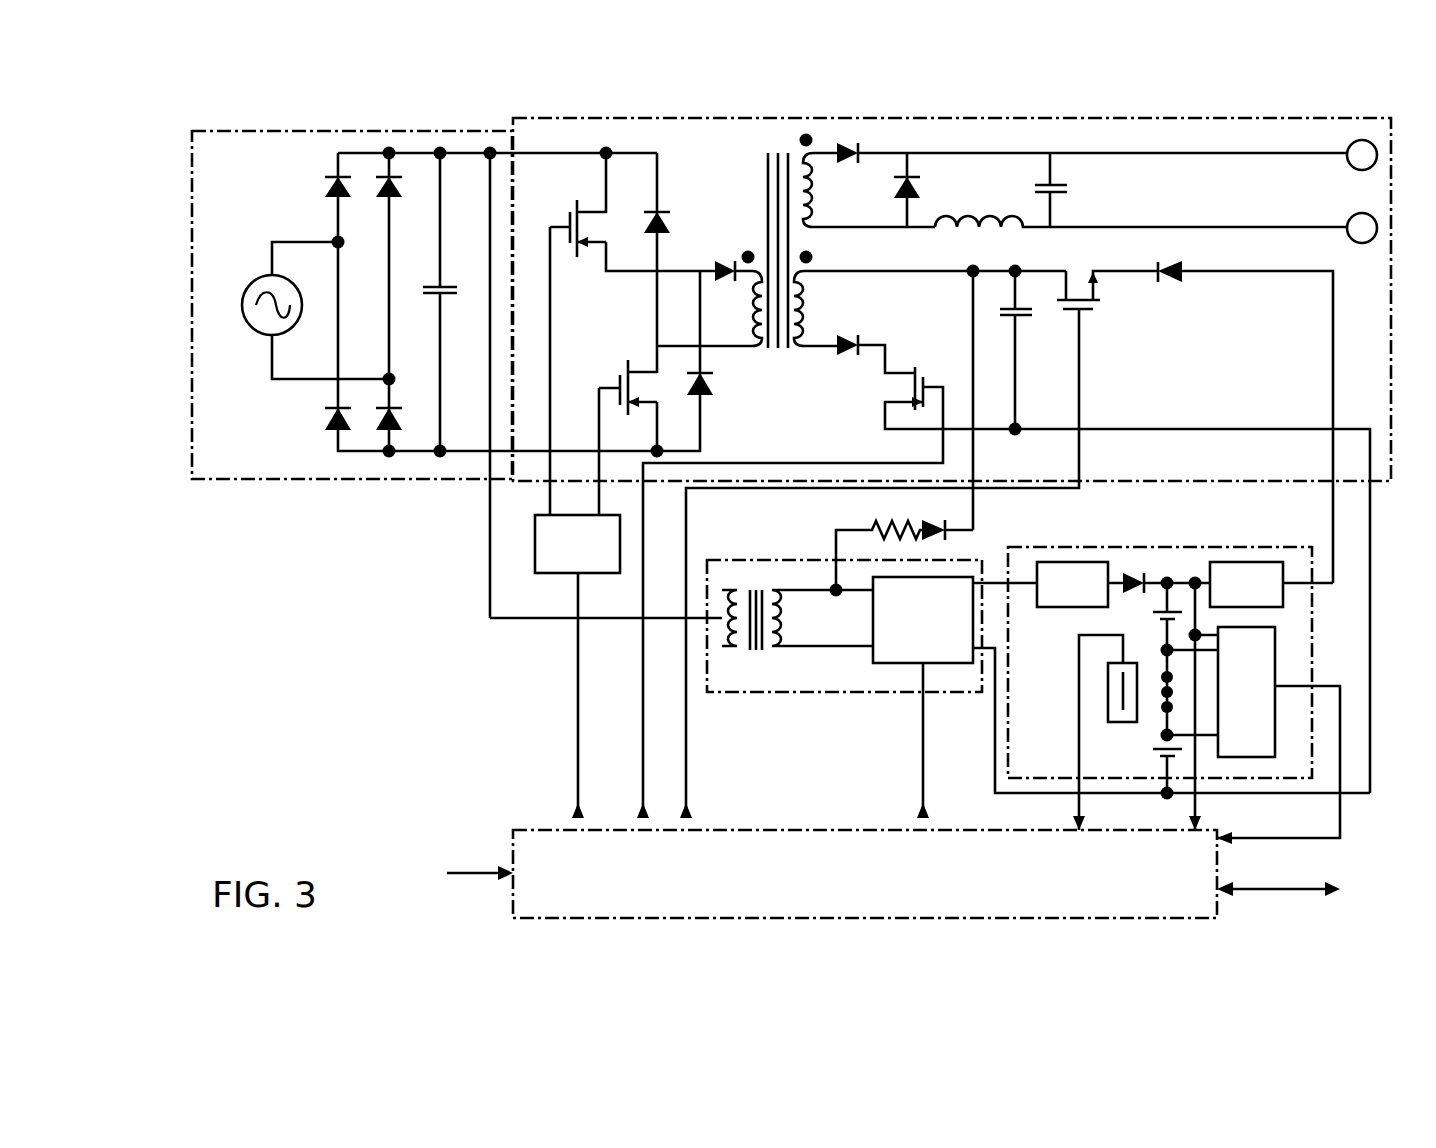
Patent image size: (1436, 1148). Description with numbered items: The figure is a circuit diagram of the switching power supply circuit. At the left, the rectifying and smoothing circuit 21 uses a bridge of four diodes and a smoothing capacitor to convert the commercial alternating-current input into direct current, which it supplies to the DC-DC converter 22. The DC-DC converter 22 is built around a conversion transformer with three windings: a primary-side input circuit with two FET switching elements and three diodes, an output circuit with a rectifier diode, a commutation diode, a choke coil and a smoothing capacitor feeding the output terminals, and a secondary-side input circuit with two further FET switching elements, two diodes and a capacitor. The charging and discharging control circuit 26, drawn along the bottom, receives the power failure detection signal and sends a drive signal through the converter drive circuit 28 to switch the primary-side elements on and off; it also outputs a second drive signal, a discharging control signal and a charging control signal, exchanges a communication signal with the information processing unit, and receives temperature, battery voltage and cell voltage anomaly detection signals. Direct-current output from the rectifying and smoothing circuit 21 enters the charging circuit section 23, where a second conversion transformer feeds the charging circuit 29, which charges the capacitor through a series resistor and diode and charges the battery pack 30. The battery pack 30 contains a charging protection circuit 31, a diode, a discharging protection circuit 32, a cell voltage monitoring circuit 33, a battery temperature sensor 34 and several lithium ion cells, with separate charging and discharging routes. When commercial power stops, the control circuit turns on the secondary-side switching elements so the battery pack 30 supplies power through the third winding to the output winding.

The rectifying and smoothing circuit 21 is at (199, 131).
The DC-DC converter 22 is at (605, 118).
The charging circuit section 23 is at (707, 692).
The charging and discharging control circuit 26 is at (514, 830).
The converter drive circuit 28 is at (535, 540).
The charging circuit 29 is at (878, 663).
The battery pack 30 is at (1185, 679).
The charging protection circuit 31 is at (1060, 607).
The discharging protection circuit 32 is at (1288, 605).
The cell voltage monitoring circuit 33 is at (1278, 668).
The battery temperature sensor 34 is at (1108, 722).